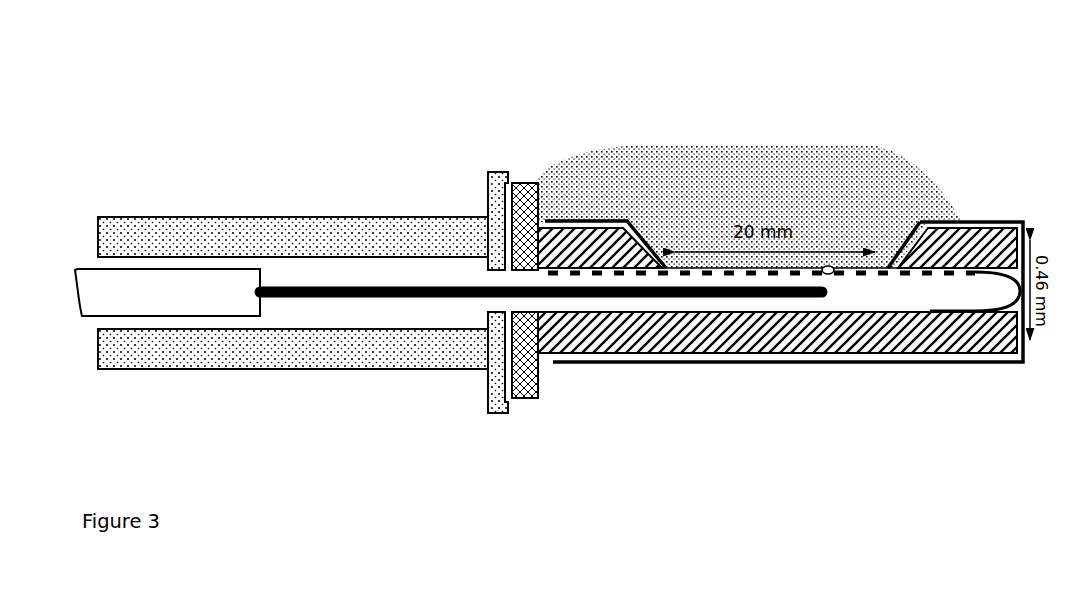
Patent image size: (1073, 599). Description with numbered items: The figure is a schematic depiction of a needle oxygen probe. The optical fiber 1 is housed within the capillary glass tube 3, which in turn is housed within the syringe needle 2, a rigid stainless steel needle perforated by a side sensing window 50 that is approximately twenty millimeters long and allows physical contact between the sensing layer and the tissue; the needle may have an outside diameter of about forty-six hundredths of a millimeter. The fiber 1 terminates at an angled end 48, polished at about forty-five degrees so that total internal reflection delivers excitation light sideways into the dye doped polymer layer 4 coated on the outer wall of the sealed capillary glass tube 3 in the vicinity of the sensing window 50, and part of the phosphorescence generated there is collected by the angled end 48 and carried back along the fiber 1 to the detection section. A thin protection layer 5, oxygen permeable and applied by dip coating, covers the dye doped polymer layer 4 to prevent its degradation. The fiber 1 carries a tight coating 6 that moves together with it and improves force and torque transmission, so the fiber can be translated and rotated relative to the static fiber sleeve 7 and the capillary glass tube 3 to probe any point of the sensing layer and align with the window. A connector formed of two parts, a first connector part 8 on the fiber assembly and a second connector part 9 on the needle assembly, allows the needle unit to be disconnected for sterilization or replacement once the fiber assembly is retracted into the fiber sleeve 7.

The optical fiber 1 is at (304, 284).
The syringe needle 2 is at (627, 344).
The capillary glass tube 3 is at (997, 288).
The dye doped polymer layer 4 is at (880, 258).
The thin protection layer 5 is at (980, 216).
The tight coating 6 is at (223, 267).
The fiber sleeve 7 is at (337, 350).
The connector part 8 is at (497, 380).
The connector part 9 is at (542, 350).
The angled end 48 is at (834, 293).
The sensing window 50 is at (772, 212).